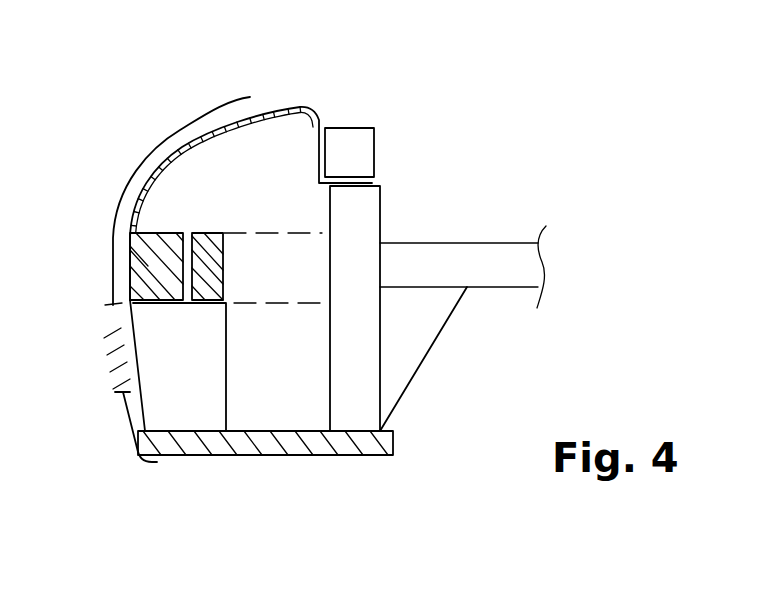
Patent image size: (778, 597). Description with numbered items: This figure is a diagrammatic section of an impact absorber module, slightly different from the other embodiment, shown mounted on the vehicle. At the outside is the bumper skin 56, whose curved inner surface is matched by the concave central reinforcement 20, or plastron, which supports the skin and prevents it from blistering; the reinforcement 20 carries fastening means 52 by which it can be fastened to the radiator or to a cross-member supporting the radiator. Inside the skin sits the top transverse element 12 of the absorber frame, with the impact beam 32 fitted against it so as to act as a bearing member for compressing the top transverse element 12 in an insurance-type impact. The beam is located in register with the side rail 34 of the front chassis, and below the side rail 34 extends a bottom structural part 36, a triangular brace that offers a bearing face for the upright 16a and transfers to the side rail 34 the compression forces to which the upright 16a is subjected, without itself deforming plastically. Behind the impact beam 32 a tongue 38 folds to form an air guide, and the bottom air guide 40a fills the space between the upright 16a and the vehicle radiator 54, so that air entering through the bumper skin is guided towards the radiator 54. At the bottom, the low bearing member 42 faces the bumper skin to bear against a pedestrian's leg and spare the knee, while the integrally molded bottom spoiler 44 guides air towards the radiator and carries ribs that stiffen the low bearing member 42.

The top transverse element 12 is at (156, 265).
The upright 16a is at (181, 389).
The central reinforcement 20 is at (271, 103).
The impact beam 32 is at (211, 250).
The side rail 34 is at (493, 263).
The bottom structural part 36 is at (418, 322).
The tongue 38 is at (290, 263).
The bottom air guide 40a is at (270, 400).
The low bearing member 42 is at (150, 447).
The bottom spoiler 44 is at (306, 441).
The fastening means 52 is at (323, 122).
The vehicle radiator 54 is at (362, 218).
The bumper skin 56 is at (138, 175).